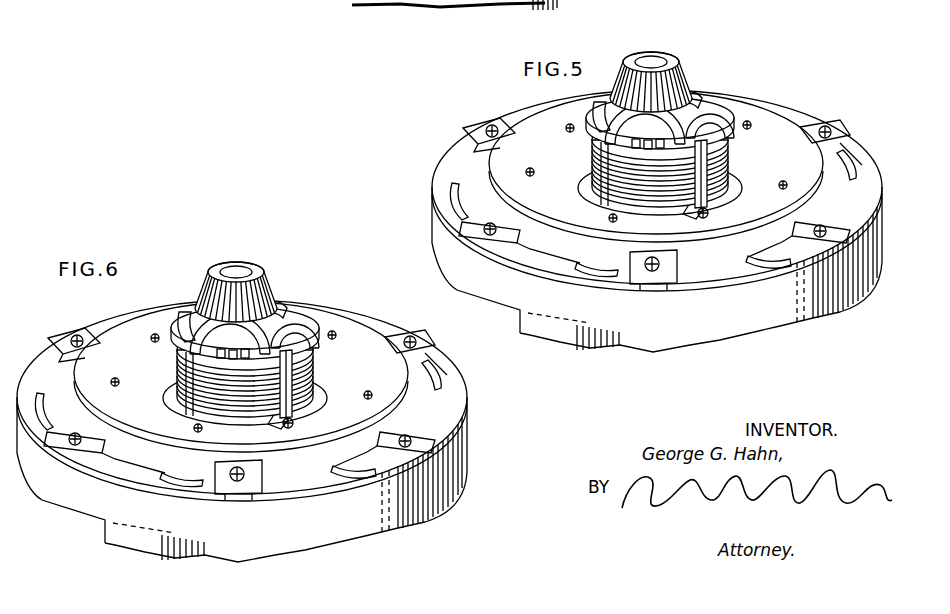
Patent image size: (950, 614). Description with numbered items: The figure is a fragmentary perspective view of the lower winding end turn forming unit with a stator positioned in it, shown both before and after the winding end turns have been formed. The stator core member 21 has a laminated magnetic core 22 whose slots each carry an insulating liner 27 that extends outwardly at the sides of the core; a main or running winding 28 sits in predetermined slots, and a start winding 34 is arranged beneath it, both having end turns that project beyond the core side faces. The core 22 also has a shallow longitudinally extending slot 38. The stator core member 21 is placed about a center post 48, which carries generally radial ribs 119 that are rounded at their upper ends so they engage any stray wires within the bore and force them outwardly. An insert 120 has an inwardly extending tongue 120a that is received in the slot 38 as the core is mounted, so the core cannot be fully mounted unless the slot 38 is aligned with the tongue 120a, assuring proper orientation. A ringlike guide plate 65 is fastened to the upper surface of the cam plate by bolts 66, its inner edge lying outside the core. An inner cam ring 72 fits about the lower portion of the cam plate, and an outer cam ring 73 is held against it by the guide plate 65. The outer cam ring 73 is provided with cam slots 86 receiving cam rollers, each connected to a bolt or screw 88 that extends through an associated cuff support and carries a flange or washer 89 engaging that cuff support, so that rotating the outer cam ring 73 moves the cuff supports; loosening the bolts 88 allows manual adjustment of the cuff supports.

In FIG. 5, the stator core member 21 is at (780, 105).
In FIG. 6, the stator core member 21 is at (392, 301).
In FIG. 5, the laminated magnetic core 22 is at (592, 145).
In FIG. 6, the laminated magnetic core 22 is at (215, 373).
In FIG. 5, the insulating liner 27 is at (710, 130).
In FIG. 6, the insulating liner 27 is at (221, 377).
In FIG. 5, the main or running winding 28 is at (725, 100).
In FIG. 6, the main or running winding 28 is at (260, 317).
In FIG. 5, the start winding 34 is at (707, 100).
In FIG. 6, the start winding 34 is at (287, 315).
In FIG. 5, the shallow longitudinally extending slot 38 is at (727, 178).
In FIG. 6, the shallow longitudinally extending slot 38 is at (283, 384).
In FIG. 5, the center post 48 is at (652, 51).
In FIG. 6, the center post 48 is at (236, 272).
In FIG. 5, the ringlike guide plate 65 is at (502, 167).
In FIG. 6, the ringlike guide plate 65 is at (241, 366).
In FIG. 5, the bolts 66 is at (785, 182).
In FIG. 6, the bolts 66 is at (241, 381).
In FIG. 5, the inner cam ring 72 is at (840, 310).
In FIG. 6, the inner cam ring 72 is at (266, 479).
In FIG. 5, the outer cam ring 73 is at (443, 233).
In FIG. 6, the outer cam ring 73 is at (264, 400).
In FIG. 5, the cam slots 86 is at (857, 160).
In FIG. 6, the cam slots 86 is at (238, 388).
In FIG. 6, the bolt or screw 88 is at (246, 396).
In FIG. 6, the flange or washer 89 is at (246, 428).
In FIG. 5, the radial ribs 119 is at (673, 100).
In FIG. 6, the radial ribs 119 is at (249, 295).
In FIG. 5, the insert 120 is at (715, 215).
In FIG. 6, the insert 120 is at (316, 429).
In FIG. 5, the tongue 120a is at (690, 205).
In FIG. 6, the tongue 120a is at (265, 426).